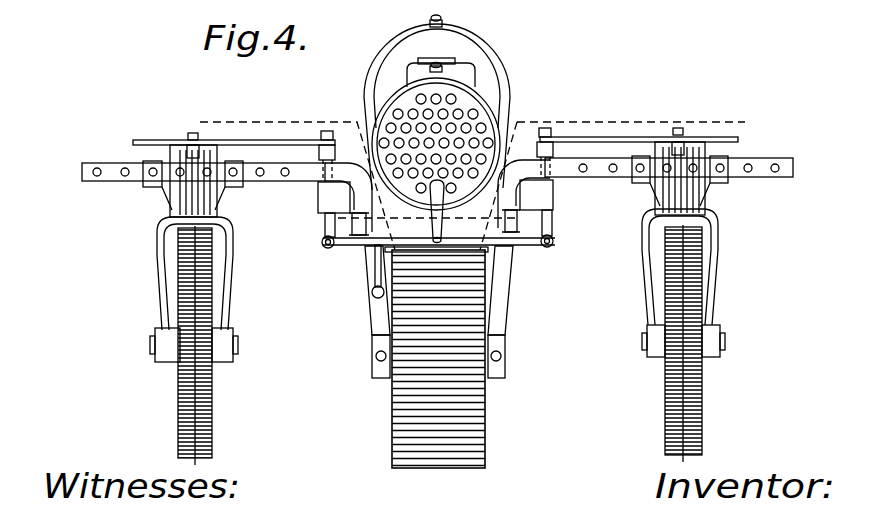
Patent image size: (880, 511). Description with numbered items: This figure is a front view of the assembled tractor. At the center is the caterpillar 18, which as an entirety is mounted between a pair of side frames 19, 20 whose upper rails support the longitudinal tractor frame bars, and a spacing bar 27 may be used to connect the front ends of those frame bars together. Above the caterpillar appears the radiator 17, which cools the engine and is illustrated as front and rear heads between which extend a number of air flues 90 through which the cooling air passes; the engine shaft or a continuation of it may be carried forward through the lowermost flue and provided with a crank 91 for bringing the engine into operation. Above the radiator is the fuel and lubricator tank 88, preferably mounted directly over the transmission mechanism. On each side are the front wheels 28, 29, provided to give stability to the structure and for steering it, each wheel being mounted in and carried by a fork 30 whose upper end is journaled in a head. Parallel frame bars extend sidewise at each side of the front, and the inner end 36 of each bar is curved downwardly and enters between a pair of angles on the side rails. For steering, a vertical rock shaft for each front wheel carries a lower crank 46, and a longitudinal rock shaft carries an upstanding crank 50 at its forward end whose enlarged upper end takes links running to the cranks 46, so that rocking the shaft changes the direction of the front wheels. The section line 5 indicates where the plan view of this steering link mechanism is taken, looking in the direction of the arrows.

The fuel and lubricator tank 88 is at (455, 43).
The radiator 17 is at (492, 118).
The air flues 90 is at (392, 128).
The section line 5— 5 is at (229, 124).
The inner end of frame bar 36 is at (345, 188).
The crank 46 is at (322, 244).
The upstanding crank 50 is at (372, 272).
The side frame 19 is at (373, 308).
The crank 91 is at (435, 242).
The side frame 20 is at (500, 316).
The caterpillar 18 is at (412, 421).
The spacing bar 27 is at (493, 240).
The fork 30 is at (155, 250).
The front wheel 29 is at (212, 447).
The front wheel 28 is at (668, 420).